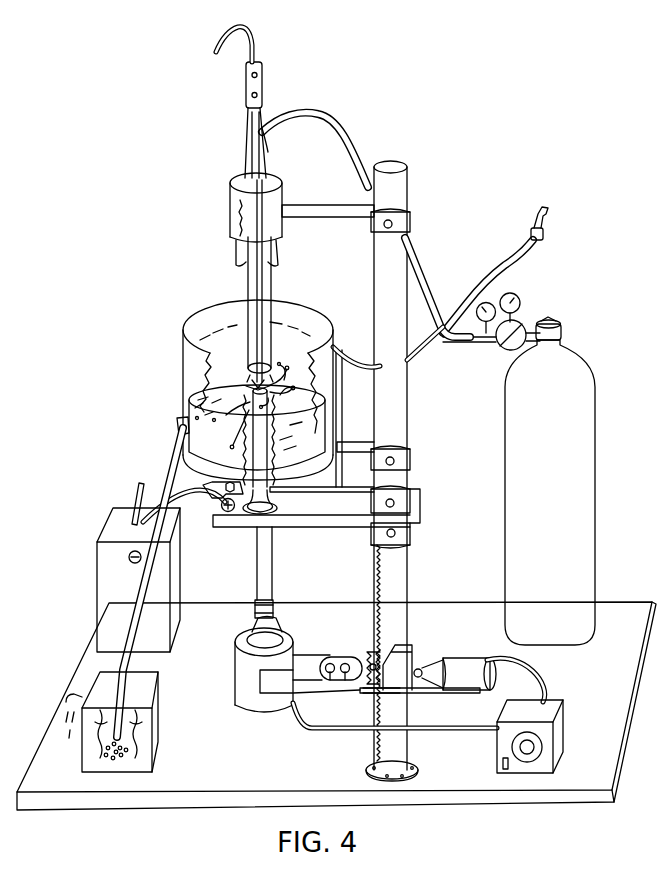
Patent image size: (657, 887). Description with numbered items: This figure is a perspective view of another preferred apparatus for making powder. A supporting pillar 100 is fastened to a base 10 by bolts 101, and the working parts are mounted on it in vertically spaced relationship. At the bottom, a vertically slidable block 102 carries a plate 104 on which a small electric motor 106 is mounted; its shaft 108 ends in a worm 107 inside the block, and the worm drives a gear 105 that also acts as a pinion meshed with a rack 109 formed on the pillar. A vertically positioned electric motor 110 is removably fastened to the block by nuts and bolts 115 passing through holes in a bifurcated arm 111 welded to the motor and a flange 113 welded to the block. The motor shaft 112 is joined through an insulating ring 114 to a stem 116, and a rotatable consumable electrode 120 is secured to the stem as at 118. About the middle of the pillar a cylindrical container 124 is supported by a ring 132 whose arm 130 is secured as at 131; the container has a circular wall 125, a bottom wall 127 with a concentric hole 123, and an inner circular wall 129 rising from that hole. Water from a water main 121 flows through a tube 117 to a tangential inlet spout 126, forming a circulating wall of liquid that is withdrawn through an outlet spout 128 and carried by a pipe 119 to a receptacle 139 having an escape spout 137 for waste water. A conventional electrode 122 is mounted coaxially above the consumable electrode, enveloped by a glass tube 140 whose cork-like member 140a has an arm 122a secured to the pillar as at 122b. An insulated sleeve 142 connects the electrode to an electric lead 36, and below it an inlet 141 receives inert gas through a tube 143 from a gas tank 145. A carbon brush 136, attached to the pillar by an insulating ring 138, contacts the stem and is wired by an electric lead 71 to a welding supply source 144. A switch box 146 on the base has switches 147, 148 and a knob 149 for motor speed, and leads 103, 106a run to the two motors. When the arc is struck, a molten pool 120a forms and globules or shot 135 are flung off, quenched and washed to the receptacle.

The base 10 is at (222, 765).
The electric lead 36 is at (216, 50).
The electric lead 71 is at (180, 499).
The supporting pillar 100 is at (408, 416).
The bolts 101 is at (385, 778).
The vertically slidable block 102 is at (408, 645).
The lead 103 is at (333, 730).
The plate 104 is at (480, 694).
The gear 105 is at (366, 660).
The small electric motor 106 is at (478, 680).
The lead 106a is at (541, 688).
The worm 107 is at (365, 690).
The shaft 108 is at (419, 668).
The rack 109 is at (375, 596).
The electric motor 110 is at (278, 715).
The bifurcated arm 111 is at (300, 655).
The shaft 112 is at (253, 625).
The flange 113 is at (336, 658).
The insulating ring 114 is at (274, 603).
The nuts and bolts 115 is at (336, 680).
The stem 116 is at (272, 527).
The tube 117 is at (489, 268).
The securing point 118 is at (272, 494).
The pipe 119 is at (137, 658).
The consumable electrode 120 is at (269, 471).
The molten pool 120a is at (252, 382).
The water main 121 is at (548, 222).
The conventional electrode 122 is at (270, 292).
The arm 122a is at (303, 210).
The securing point 122b is at (393, 222).
The concentric hole 123 is at (278, 440).
The cylindrical container 124 is at (337, 396).
The circular wall 125 is at (183, 373).
The inlet spout 126 is at (339, 347).
The bottom wall 127 is at (220, 458).
The outlet spout 128 is at (177, 440).
The inner circular wall 129 is at (257, 393).
The arm 130 is at (343, 444).
The securing point 131 is at (395, 462).
The ring 132 is at (345, 495).
The globules or shot 135 is at (185, 428).
The carbon brush 136 is at (246, 527).
The escape spout 137 is at (66, 702).
The insulating ring 138 is at (408, 534).
The receptacle 139 is at (90, 760).
The glass tube 140 is at (246, 158).
The cork-like member 140a is at (229, 232).
The inlet 141 is at (268, 138).
The insulated sleeve 142 is at (263, 89).
The tube 143 is at (347, 129).
The electrical welding supply source 144 is at (131, 601).
The gas tank 145 is at (562, 501).
The switch box 146 is at (547, 718).
The switch 147 is at (503, 762).
The switch 148 is at (129, 557).
The knob 149 is at (542, 745).